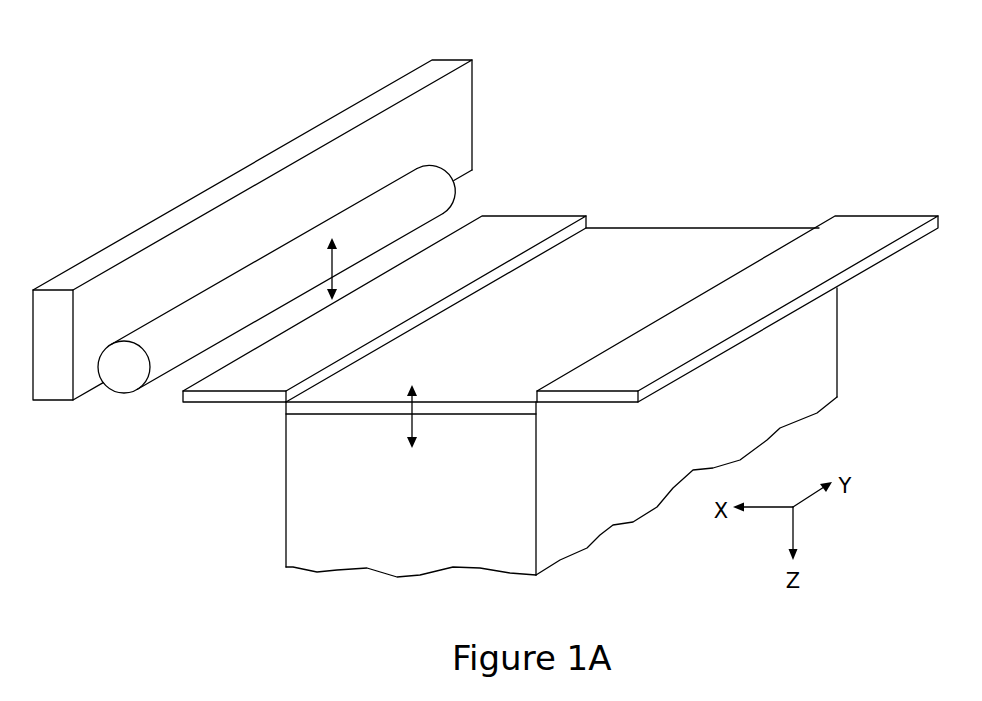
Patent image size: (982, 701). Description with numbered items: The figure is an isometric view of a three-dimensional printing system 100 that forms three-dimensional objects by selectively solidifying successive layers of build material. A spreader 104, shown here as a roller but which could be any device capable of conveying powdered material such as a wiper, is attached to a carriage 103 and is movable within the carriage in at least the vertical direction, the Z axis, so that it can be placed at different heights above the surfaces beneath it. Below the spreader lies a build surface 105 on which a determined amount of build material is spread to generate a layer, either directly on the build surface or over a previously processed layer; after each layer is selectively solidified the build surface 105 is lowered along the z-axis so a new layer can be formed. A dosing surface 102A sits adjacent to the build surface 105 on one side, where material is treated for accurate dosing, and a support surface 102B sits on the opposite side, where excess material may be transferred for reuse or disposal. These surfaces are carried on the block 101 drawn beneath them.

The 3D printing system 100 is at (256, 141).
The stage / substrate block 101 is at (353, 540).
The dosing surface 102A is at (265, 373).
The support surface 102B is at (645, 360).
The carriage 103 is at (453, 113).
The spreader 104 is at (438, 182).
The build surface 105 is at (665, 258).